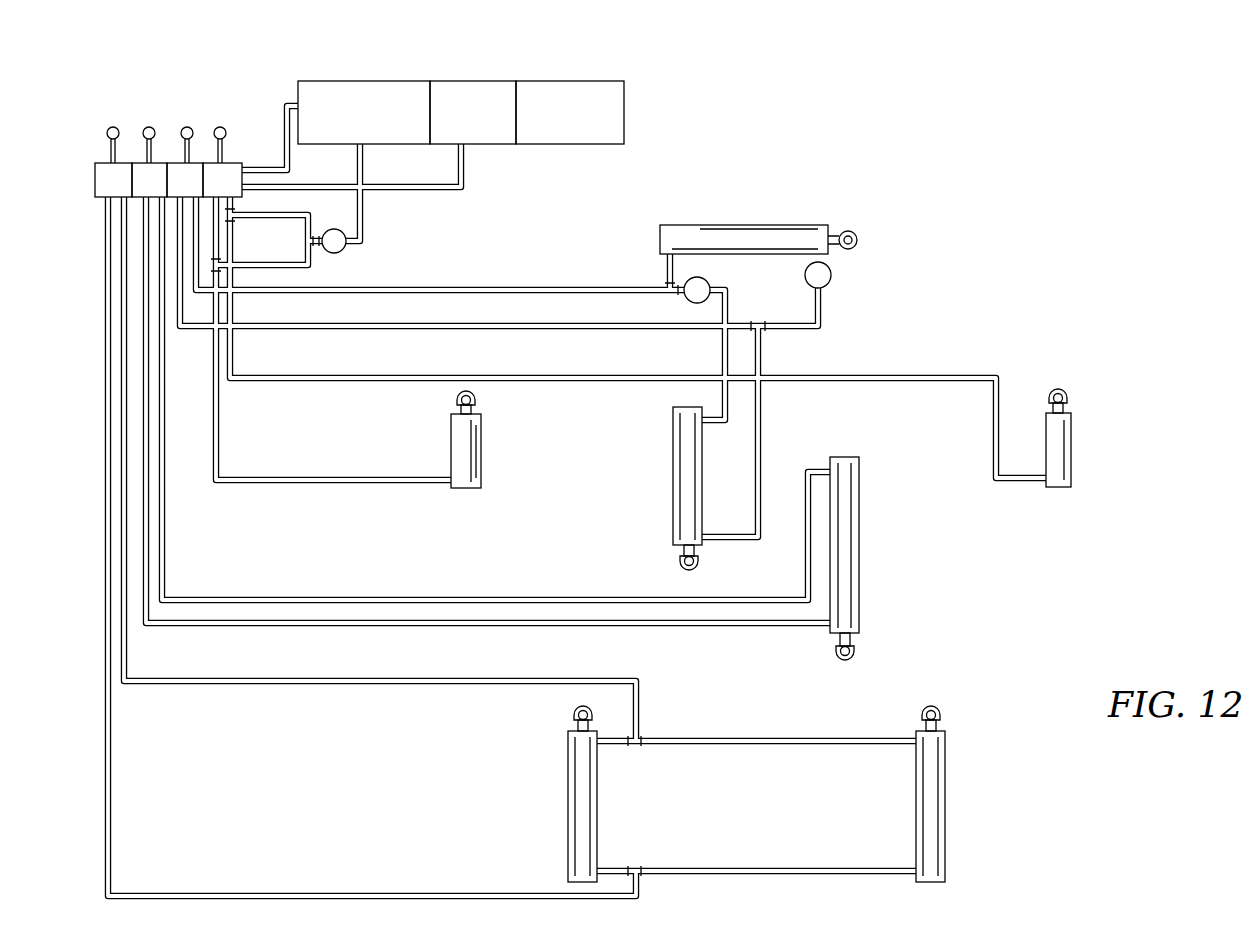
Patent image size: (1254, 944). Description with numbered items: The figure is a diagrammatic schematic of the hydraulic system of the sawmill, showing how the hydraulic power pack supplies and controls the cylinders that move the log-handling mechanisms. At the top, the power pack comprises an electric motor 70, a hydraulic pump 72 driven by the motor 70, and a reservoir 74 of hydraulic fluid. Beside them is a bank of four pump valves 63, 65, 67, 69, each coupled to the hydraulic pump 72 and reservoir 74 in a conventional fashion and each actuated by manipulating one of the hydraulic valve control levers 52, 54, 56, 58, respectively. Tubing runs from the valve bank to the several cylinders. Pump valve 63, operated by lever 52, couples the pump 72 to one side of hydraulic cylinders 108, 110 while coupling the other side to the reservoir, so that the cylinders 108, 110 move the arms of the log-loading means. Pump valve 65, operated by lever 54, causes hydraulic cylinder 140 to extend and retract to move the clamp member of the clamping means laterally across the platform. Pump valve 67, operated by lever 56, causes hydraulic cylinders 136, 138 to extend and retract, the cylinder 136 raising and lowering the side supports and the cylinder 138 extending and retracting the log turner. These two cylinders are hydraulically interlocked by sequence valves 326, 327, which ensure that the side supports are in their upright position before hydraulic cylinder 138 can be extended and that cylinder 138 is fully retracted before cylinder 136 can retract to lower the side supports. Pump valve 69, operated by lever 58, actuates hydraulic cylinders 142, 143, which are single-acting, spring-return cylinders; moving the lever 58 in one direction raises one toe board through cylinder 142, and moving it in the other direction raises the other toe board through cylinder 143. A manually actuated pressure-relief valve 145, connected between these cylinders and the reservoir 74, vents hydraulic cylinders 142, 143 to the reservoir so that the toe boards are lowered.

The hydraulic valve control lever 52 is at (112, 127).
The hydraulic valve control lever 54 is at (150, 127).
The hydraulic valve control lever 56 is at (188, 127).
The hydraulic valve control lever 58 is at (221, 130).
The pump valve 63 is at (105, 172).
The pump valve 65 is at (157, 170).
The pump valve 67 is at (191, 173).
The pump valve 69 is at (231, 167).
The reservoir 74 is at (377, 87).
The hydraulic pump 72 is at (475, 87).
The electric motor 70 is at (580, 87).
The pressure-relief valve 145 is at (342, 251).
The sequence valve 326 is at (708, 281).
The sequence valve 327 is at (831, 276).
The hydraulic cylinder 136 is at (755, 232).
The hydraulic cylinder 138 is at (672, 482).
The hydraulic cylinder 140 is at (860, 568).
The hydraulic cylinder 142 is at (470, 450).
The hydraulic cylinder 143 is at (1073, 447).
The hydraulic cylinder 108 is at (592, 808).
The hydraulic cylinder 110 is at (928, 805).